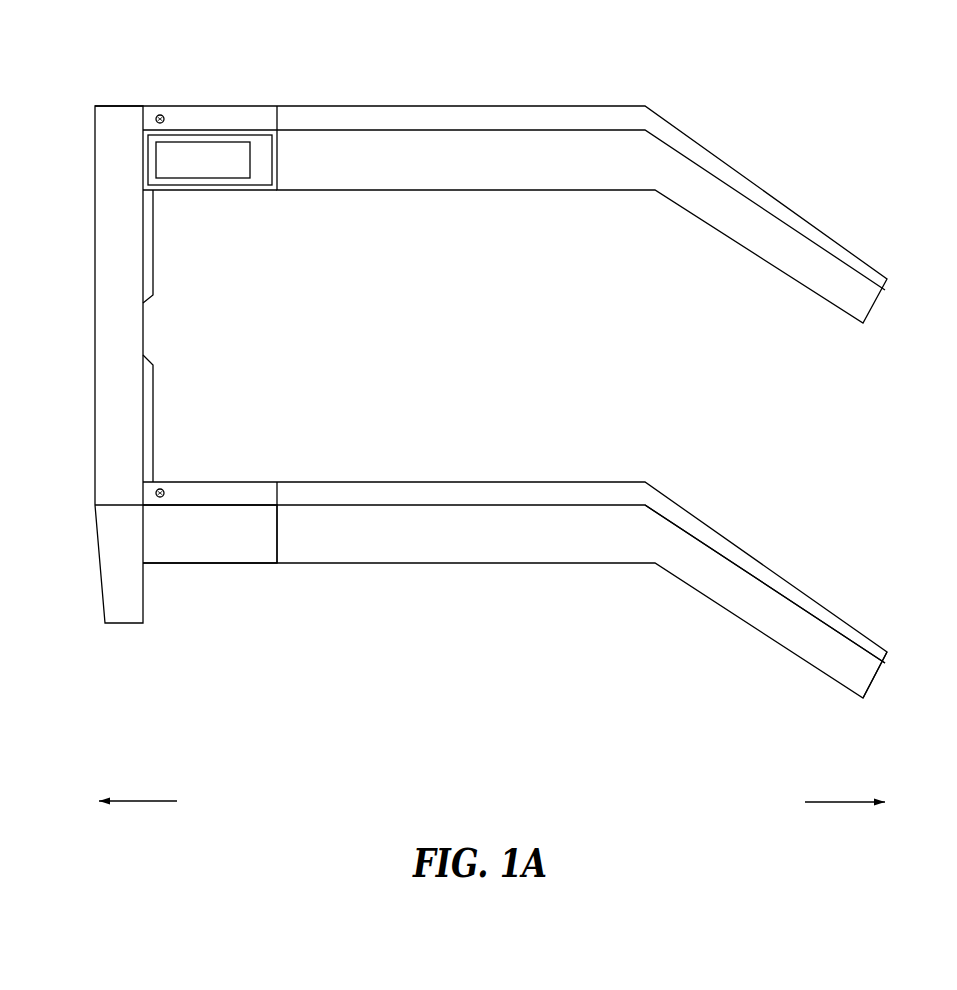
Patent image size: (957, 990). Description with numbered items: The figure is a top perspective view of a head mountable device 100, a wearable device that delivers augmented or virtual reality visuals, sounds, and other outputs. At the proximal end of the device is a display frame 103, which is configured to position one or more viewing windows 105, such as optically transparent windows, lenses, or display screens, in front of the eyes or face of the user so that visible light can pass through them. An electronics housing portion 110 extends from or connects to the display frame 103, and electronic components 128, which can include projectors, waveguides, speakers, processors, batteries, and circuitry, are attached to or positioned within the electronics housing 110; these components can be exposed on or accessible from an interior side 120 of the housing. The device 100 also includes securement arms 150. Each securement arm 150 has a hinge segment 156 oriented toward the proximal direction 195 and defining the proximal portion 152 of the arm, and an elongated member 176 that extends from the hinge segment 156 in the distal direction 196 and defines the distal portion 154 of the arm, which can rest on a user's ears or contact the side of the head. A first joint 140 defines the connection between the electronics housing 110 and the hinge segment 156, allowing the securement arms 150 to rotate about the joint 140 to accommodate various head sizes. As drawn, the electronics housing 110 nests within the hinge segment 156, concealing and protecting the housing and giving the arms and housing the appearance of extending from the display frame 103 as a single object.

The head mountable device 100 is at (178, 60).
The display frame 103 is at (86, 257).
The viewing windows 105 is at (153, 265).
The electronics housing portion 110 is at (266, 192).
The interior side 120 is at (263, 143).
The electronic components 128 is at (202, 163).
The first joint 140 is at (166, 484).
The securement arms 150 is at (362, 580).
The proximal portion 152 is at (158, 550).
The distal portion 154 is at (832, 658).
The hinge segment 156 is at (211, 547).
The elongated member 176 is at (703, 530).
The proximal direction 195 is at (142, 802).
The distal direction 196 is at (838, 803).